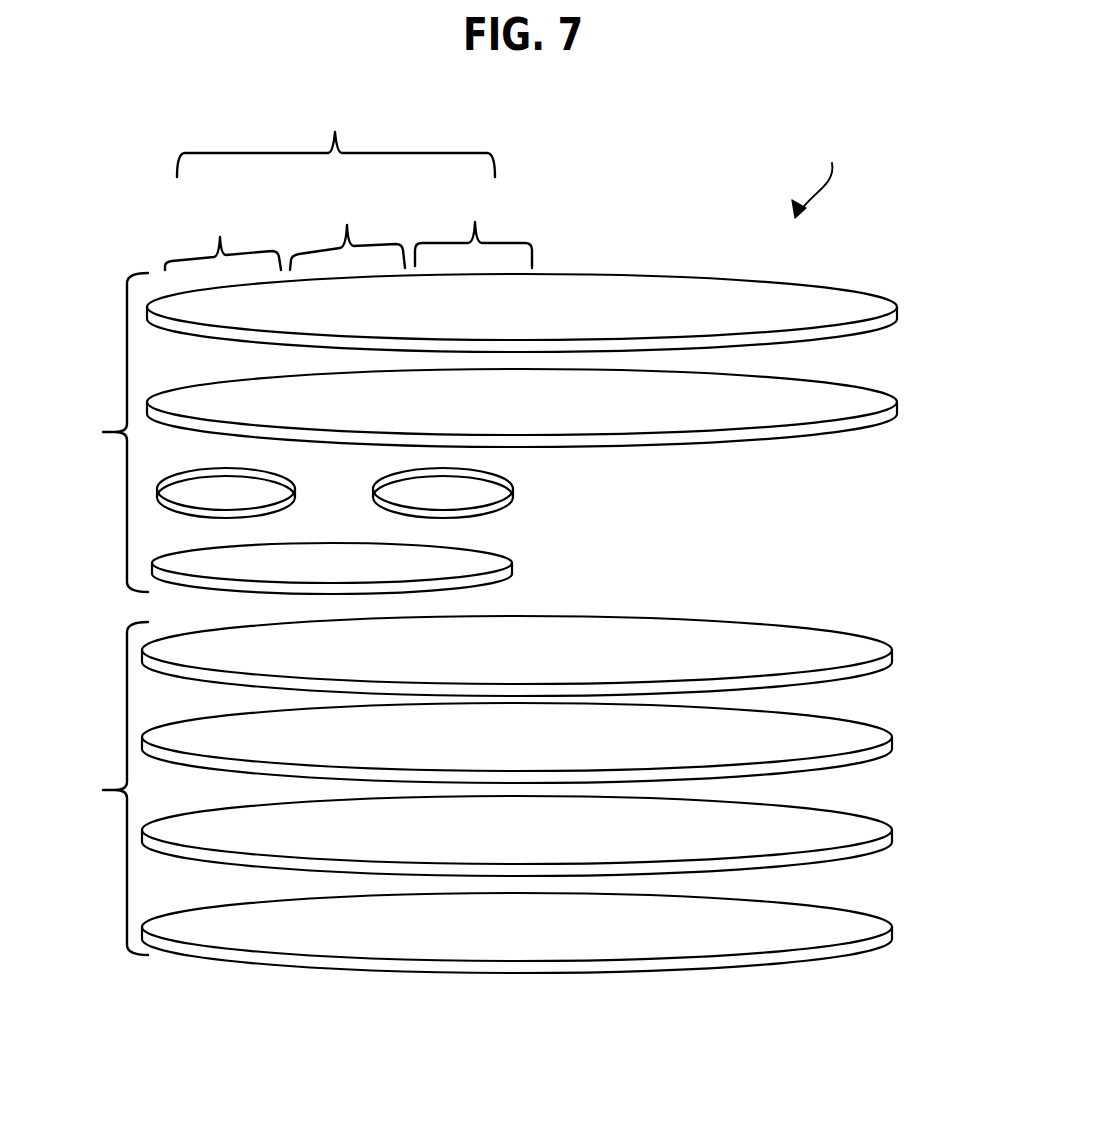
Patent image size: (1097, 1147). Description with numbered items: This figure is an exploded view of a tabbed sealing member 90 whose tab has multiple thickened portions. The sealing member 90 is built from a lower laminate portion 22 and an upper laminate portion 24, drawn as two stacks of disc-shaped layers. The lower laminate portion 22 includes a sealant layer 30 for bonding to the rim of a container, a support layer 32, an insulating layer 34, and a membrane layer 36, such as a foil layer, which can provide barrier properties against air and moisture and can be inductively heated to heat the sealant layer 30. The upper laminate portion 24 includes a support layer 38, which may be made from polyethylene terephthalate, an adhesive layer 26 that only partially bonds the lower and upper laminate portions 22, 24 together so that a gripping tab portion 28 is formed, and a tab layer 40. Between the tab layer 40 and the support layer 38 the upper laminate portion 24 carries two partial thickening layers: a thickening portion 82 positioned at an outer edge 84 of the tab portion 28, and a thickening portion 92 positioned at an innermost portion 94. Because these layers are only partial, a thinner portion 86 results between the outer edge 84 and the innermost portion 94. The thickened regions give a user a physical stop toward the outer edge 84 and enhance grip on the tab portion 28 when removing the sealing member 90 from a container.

The sealing member 90 is at (819, 174).
The gripping tab portion 28 is at (336, 126).
The outer edge 84 is at (223, 237).
The thinner portion 86 is at (347, 230).
The innermost portion 94 is at (473, 225).
The upper laminate portion 24 is at (101, 432).
The lower laminate portion 22 is at (101, 788).
The support layer 38 is at (832, 303).
The adhesive layer 26 is at (832, 397).
The thickening layer 82 is at (252, 492).
The thickening portion 92 is at (475, 492).
The tab layer 40 is at (457, 565).
The insulating layer 34 is at (832, 642).
The membrane layer 36 is at (832, 736).
The support layer 32 is at (832, 824).
The sealant layer 30 is at (832, 920).